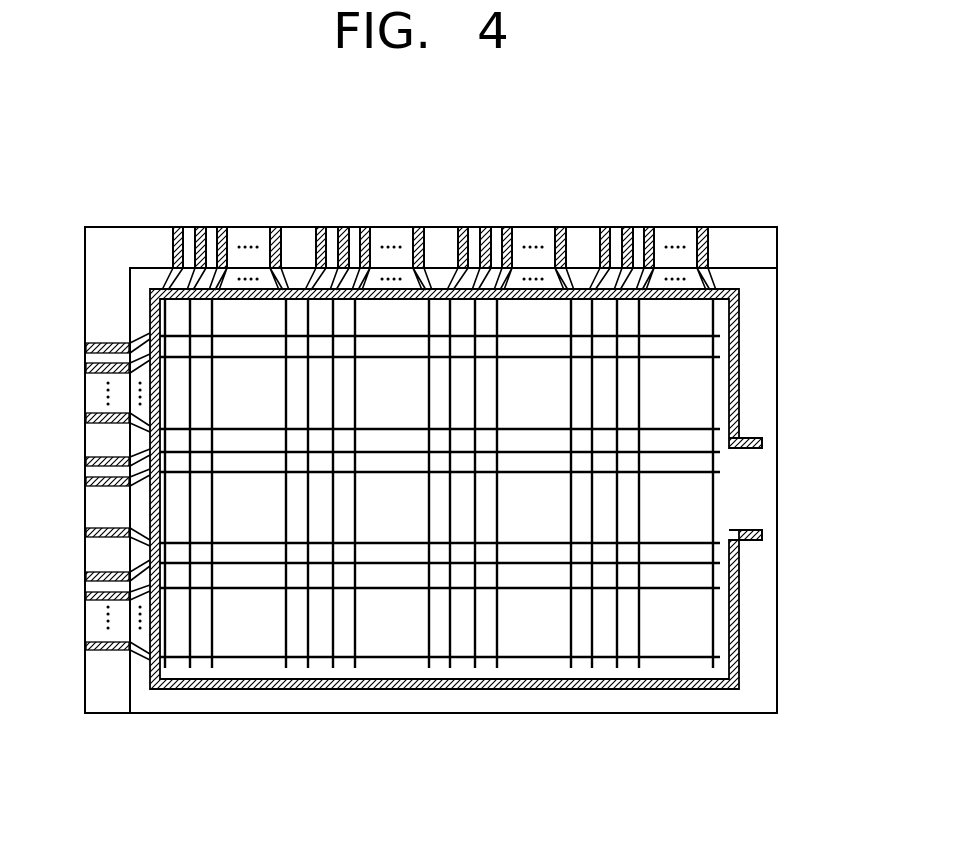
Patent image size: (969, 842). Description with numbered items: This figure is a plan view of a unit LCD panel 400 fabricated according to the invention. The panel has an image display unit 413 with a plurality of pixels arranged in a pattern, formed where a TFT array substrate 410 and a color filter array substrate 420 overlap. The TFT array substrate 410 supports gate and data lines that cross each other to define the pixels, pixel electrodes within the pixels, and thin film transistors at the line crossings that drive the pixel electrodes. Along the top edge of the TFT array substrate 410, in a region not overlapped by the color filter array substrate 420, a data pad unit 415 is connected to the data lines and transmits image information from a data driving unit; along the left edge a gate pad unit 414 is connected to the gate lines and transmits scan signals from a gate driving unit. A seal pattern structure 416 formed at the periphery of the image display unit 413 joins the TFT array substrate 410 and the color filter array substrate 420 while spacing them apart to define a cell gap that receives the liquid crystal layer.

The unit LCD panel 400 is at (111, 214).
The TFT array substrate 410 is at (777, 248).
The image display unit 413 is at (412, 404).
The gate pad unit 414 is at (77, 653).
The data pad unit 415 is at (713, 212).
The seal pattern structure 416 is at (739, 370).
The color filter array substrate 420 is at (768, 305).